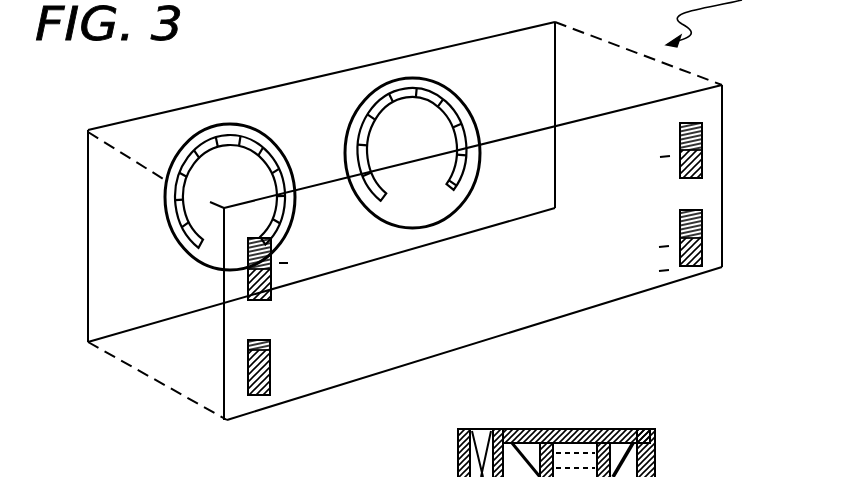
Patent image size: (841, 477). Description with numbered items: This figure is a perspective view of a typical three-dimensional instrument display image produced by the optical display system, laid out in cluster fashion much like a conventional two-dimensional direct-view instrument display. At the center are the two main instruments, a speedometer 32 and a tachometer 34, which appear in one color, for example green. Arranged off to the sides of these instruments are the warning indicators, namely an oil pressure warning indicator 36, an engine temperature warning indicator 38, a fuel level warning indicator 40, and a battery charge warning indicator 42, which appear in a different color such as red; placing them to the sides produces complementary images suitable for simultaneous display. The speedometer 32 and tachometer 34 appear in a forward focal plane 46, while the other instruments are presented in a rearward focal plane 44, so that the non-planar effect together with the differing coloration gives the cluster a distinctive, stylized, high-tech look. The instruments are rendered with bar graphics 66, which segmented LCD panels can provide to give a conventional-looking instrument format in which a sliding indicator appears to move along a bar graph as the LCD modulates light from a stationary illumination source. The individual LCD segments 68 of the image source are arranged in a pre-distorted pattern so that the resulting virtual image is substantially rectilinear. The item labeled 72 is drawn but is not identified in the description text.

The speedometer 32 is at (223, 175).
The tachometer 34 is at (403, 121).
The oil pressure warning indicator 36 is at (703, 160).
The engine temperature warning indicator 38 is at (250, 296).
The fuel level warning indicator 40 is at (257, 396).
The battery charge warning indicator 42 is at (695, 263).
The rearward focal plane 44 is at (88, 245).
The forward focal plane 46 is at (722, 198).
The bar graphics 66 is at (378, 98).
The LCD segments 68 is at (238, 137).
The display panel cross-section 72 is at (590, 475).